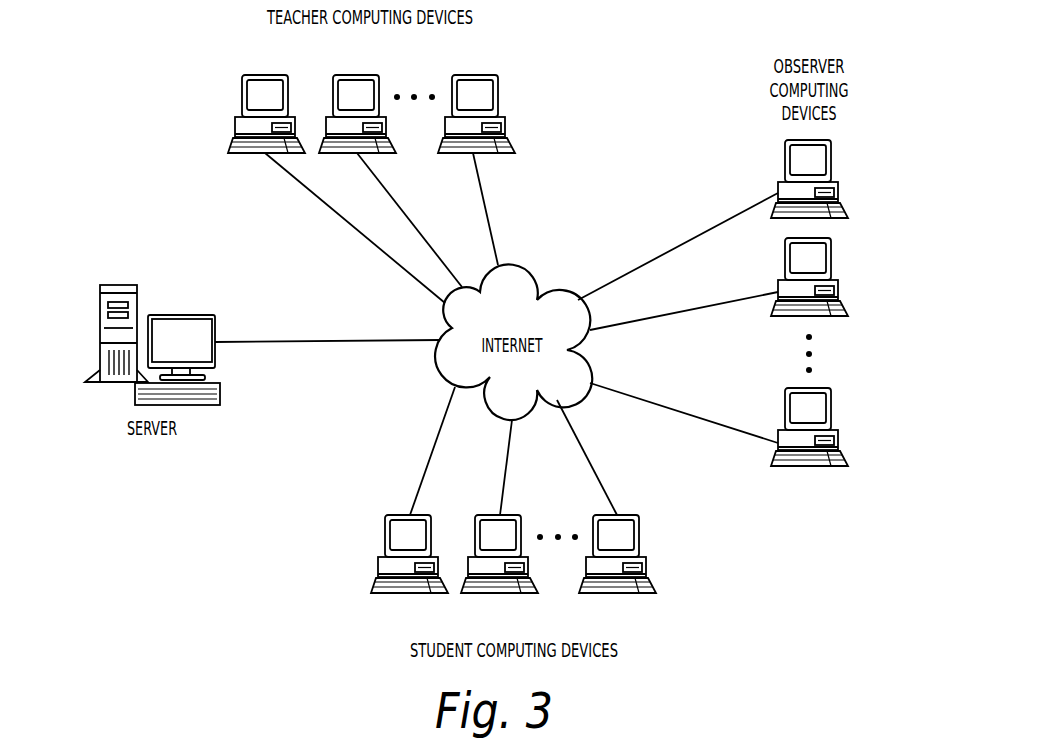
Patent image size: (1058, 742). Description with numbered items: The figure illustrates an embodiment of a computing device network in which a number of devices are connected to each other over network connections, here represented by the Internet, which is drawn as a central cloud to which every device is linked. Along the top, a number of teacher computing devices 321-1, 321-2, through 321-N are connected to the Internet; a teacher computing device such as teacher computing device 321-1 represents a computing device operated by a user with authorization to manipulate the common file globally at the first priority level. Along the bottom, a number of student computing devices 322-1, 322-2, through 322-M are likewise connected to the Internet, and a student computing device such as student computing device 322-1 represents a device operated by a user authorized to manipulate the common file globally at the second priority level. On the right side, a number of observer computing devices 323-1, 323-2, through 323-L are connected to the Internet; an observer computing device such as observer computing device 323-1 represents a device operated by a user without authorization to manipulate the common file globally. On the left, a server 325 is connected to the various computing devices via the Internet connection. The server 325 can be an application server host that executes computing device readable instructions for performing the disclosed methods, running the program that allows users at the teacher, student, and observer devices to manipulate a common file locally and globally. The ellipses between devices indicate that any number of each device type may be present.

The teacher computing device 321-1 is at (265, 75).
The teacher computing device 321-2 is at (357, 75).
The teacher computing device 321-N is at (475, 75).
The student computing device 322-1 is at (410, 594).
The student computing device 322-2 is at (500, 594).
The student computing device 322-M is at (617, 594).
The observer computing device 323-1 is at (832, 160).
The observer computing device 323-2 is at (832, 260).
The observer computing device 323-L is at (832, 410).
The server 325 is at (118, 285).